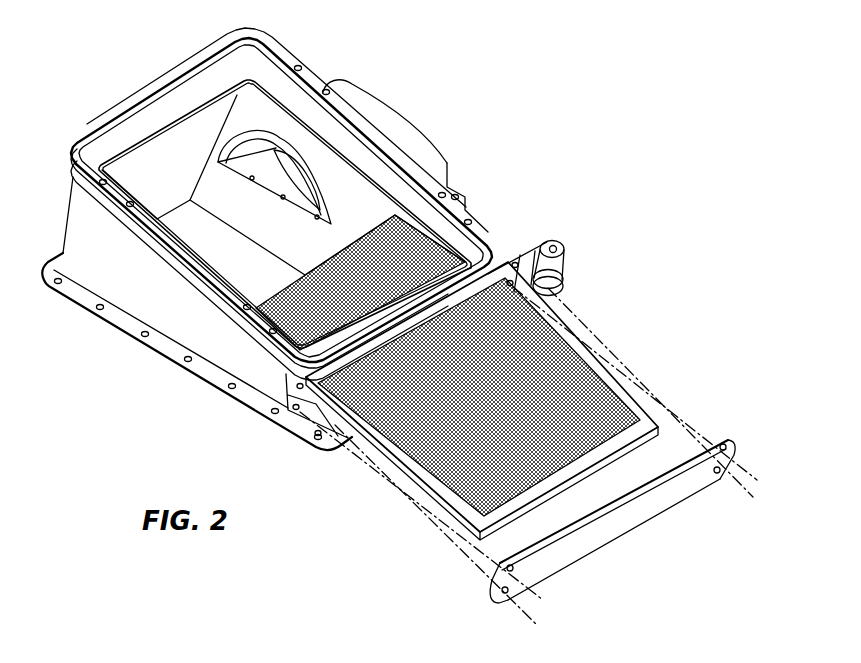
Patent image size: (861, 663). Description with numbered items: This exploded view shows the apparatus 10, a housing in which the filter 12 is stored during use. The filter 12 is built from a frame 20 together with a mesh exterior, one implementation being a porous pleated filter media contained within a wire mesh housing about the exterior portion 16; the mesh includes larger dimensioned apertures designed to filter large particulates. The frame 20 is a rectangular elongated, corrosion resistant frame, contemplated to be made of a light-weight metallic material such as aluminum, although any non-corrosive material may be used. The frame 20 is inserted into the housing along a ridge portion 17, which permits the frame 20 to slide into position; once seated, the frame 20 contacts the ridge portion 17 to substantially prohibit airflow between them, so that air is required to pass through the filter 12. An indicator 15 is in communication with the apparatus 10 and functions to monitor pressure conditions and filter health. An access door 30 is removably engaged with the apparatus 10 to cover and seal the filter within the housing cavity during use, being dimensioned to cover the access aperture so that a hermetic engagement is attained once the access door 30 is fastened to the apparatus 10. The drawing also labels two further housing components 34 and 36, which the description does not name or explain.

The apparatus 10 is at (410, 72).
The filter 12 is at (410, 462).
The indicator 15 is at (558, 268).
The exterior portion 16 is at (473, 483).
The ridge portion 17 is at (258, 92).
The frame 20 is at (496, 406).
The access door 30 is at (652, 502).
The hood top frame 34 is at (89, 137).
The hood base flange 36 is at (165, 342).